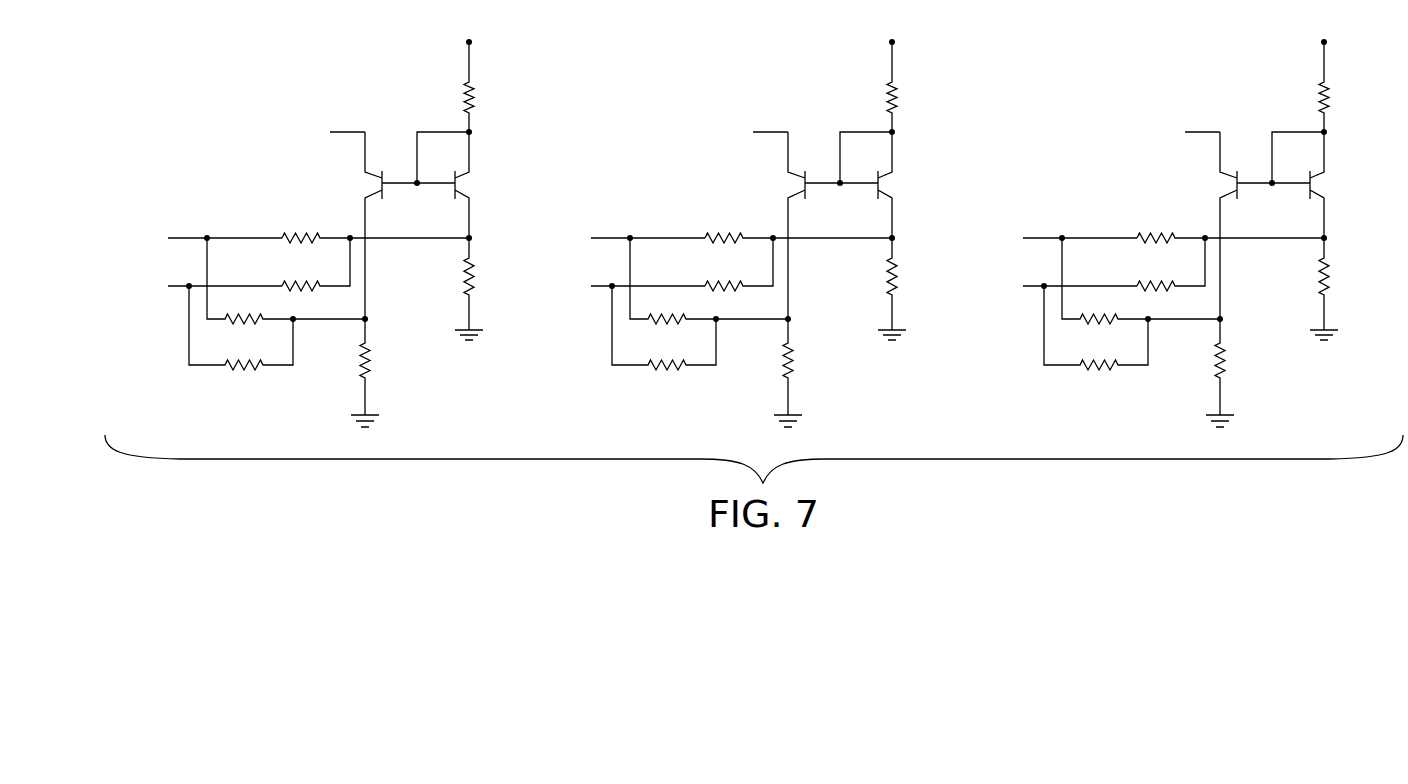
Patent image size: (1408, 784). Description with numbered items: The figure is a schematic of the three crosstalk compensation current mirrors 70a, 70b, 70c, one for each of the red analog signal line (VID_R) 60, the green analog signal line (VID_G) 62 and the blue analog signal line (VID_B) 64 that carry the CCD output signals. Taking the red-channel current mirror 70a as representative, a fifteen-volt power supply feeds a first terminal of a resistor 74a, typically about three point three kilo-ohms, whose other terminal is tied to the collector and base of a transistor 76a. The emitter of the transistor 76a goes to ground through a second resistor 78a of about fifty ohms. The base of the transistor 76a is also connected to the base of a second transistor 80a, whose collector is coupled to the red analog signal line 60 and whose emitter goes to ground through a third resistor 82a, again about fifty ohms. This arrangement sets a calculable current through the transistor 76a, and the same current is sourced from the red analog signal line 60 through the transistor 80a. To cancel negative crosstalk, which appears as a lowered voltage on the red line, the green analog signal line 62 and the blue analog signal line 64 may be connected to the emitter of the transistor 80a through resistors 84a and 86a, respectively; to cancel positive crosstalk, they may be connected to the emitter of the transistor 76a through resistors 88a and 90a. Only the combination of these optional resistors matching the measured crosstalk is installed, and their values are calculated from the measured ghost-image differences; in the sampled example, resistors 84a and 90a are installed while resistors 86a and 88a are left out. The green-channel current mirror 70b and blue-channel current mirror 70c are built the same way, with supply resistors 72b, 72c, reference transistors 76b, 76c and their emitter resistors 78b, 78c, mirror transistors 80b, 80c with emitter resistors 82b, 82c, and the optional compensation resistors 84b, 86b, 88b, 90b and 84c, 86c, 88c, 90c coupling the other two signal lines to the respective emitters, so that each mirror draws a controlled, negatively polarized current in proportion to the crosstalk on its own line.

In FIG. 7A, the red analog signal line (VID_R) 60 is at (364, 131).
In FIG. 7B, the red analog signal line (VID_R) 60 is at (614, 228).
In FIG. 7C, the red analog signal line (VID_R) 60 is at (1046, 228).
In FIG. 7A, the green analog signal line (VID_G) 62 is at (177, 237).
In FIG. 7B, the green analog signal line (VID_G) 62 is at (751, 127).
In FIG. 7C, the green analog signal line (VID_G) 62 is at (1046, 275).
In FIG. 7A, the blue analog signal line (VID_B) 64 is at (175, 283).
In FIG. 7B, the blue analog signal line (VID_B) 64 is at (614, 275).
In FIG. 7C, the blue analog signal line (VID_B) 64 is at (1183, 127).
In FIG. 7A, the current mirror 70a is at (378, 71).
In FIG. 7B, the current mirror 70b is at (740, 219).
In FIG. 7C, the current mirror 70c is at (1171, 219).
In FIG. 7B, the resistor 72b is at (922, 87).
In FIG. 7C, the resistor 72c is at (1353, 87).
In FIG. 7A, the resistor 74a is at (475, 95).
In FIG. 7A, the transistor 76a is at (467, 190).
In FIG. 7B, the transistor 76b is at (918, 185).
In FIG. 7C, the transistor 76c is at (1349, 185).
In FIG. 7A, the second resistor 78a is at (474, 295).
In FIG. 7B, the resistor 78b is at (916, 289).
In FIG. 7C, the resistor 78c is at (1347, 289).
In FIG. 7A, the second transistor 80a is at (370, 189).
In FIG. 7B, the transistor 80b is at (764, 225).
In FIG. 7C, the transistor 80c is at (1196, 225).
In FIG. 7A, the third resistor 82a is at (371, 351).
In FIG. 7B, the resistor 82b is at (814, 373).
In FIG. 7C, the resistor 82c is at (1245, 373).
In FIG. 7A, the resistor 84a is at (258, 318).
In FIG. 7B, the resistor 84b is at (709, 281).
In FIG. 7C, the resistor 84c is at (1141, 281).
In FIG. 7A, the resistor 86a is at (248, 369).
In FIG. 7B, the resistor 86b is at (664, 344).
In FIG. 7C, the resistor 86c is at (1096, 344).
In FIG. 7A, the resistor 88a is at (316, 235).
In FIG. 7B, the resistor 88b is at (774, 225).
In FIG. 7C, the resistor 88c is at (1206, 225).
In FIG. 7A, the resistor 90a is at (302, 283).
In FIG. 7B, the resistor 90b is at (714, 264).
In FIG. 7C, the resistor 90c is at (1146, 264).